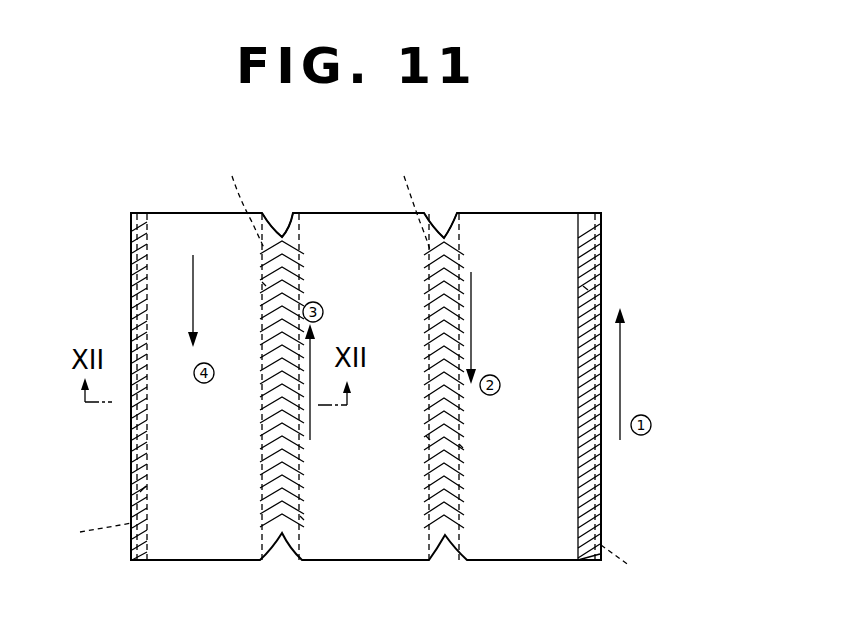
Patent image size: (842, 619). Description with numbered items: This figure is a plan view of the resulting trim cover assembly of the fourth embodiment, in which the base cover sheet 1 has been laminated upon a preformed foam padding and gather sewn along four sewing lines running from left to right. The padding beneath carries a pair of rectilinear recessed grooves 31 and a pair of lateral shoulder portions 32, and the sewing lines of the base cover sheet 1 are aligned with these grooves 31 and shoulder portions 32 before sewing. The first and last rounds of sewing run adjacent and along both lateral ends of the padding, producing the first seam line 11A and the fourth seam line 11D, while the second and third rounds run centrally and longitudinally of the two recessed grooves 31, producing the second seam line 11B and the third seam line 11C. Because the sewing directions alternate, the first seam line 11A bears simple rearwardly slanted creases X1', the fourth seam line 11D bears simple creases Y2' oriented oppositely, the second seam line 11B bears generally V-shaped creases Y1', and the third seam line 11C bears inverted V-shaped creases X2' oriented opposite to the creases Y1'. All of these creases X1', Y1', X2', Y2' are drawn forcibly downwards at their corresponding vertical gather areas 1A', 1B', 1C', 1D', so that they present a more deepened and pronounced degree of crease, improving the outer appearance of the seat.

The base cover sheet 1 is at (523, 211).
The first vertical gather area 1A' is at (633, 387).
The second vertical gather area 1B' is at (463, 217).
The third vertical gather area 1C' is at (303, 217).
The fourth vertical gather area 1D' is at (101, 387).
The first seam line 11A is at (601, 521).
The second seam line 11B is at (450, 483).
The third seam line 11C is at (280, 513).
The fourth seam line 11D is at (133, 472).
The rectilinear recessed groove 31 is at (322, 200).
The lateral shoulder portion 32 is at (355, 552).
The simple crease X1' is at (556, 294).
The inverted V-shaped crease X2' is at (293, 409).
The V-shaped crease Y1' is at (449, 445).
The simple crease Y2' is at (175, 489).